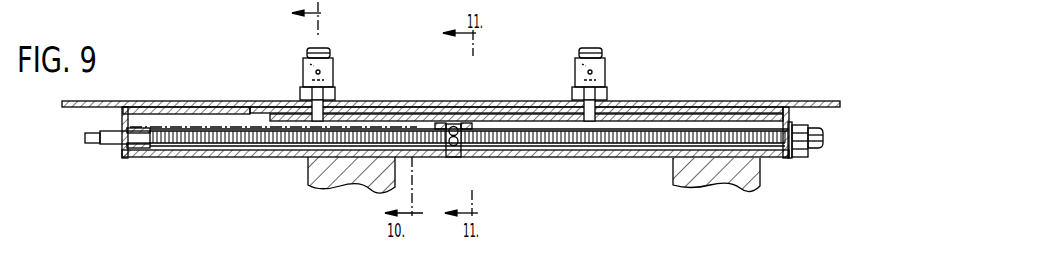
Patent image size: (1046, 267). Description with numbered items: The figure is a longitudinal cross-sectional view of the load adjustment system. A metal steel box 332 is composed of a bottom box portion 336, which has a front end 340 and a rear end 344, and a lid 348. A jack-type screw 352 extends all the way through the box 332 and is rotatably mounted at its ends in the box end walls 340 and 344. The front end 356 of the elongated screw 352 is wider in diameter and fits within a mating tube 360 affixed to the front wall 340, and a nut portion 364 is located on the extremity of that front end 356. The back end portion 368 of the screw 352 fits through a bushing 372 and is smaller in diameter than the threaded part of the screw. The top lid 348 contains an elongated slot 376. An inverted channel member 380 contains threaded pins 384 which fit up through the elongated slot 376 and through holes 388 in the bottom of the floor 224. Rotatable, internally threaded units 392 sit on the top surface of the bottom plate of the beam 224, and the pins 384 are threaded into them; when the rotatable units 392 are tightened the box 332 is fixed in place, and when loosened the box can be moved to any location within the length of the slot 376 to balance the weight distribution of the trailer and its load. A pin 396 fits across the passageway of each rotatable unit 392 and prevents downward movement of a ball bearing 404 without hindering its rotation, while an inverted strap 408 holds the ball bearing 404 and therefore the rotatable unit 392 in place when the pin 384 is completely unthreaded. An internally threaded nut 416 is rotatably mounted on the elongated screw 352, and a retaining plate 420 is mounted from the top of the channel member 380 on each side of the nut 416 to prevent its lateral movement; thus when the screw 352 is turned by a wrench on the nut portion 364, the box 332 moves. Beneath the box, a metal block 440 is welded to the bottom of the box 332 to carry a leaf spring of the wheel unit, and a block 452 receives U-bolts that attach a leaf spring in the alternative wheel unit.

The floor 224 is at (698, 103).
The box 332 is at (220, 163).
The bottom box portion 336 is at (605, 158).
The front end 340 is at (790, 110).
The rear end 344 is at (120, 120).
The lid 348 is at (160, 107).
The jack-type screw 352 is at (560, 151).
The front end 356 is at (799, 160).
The mating tube 360 is at (797, 158).
The nut portion 364 is at (824, 143).
The back end portion 368 is at (100, 144).
The bushing 372 is at (128, 160).
The elongated slot 376 is at (512, 110).
The channel member 380 is at (397, 118).
The threaded pins 384 is at (312, 103).
The holes 388 is at (347, 103).
The rotatable units 392 is at (334, 70).
The pin 396 is at (316, 72).
The ball bearing 404 is at (327, 48).
The inverted-∧ strap 408 is at (318, 47).
The nut 416 is at (450, 158).
The retaining plate 420 is at (439, 123).
The block 440 is at (307, 180).
The block 452 is at (721, 185).